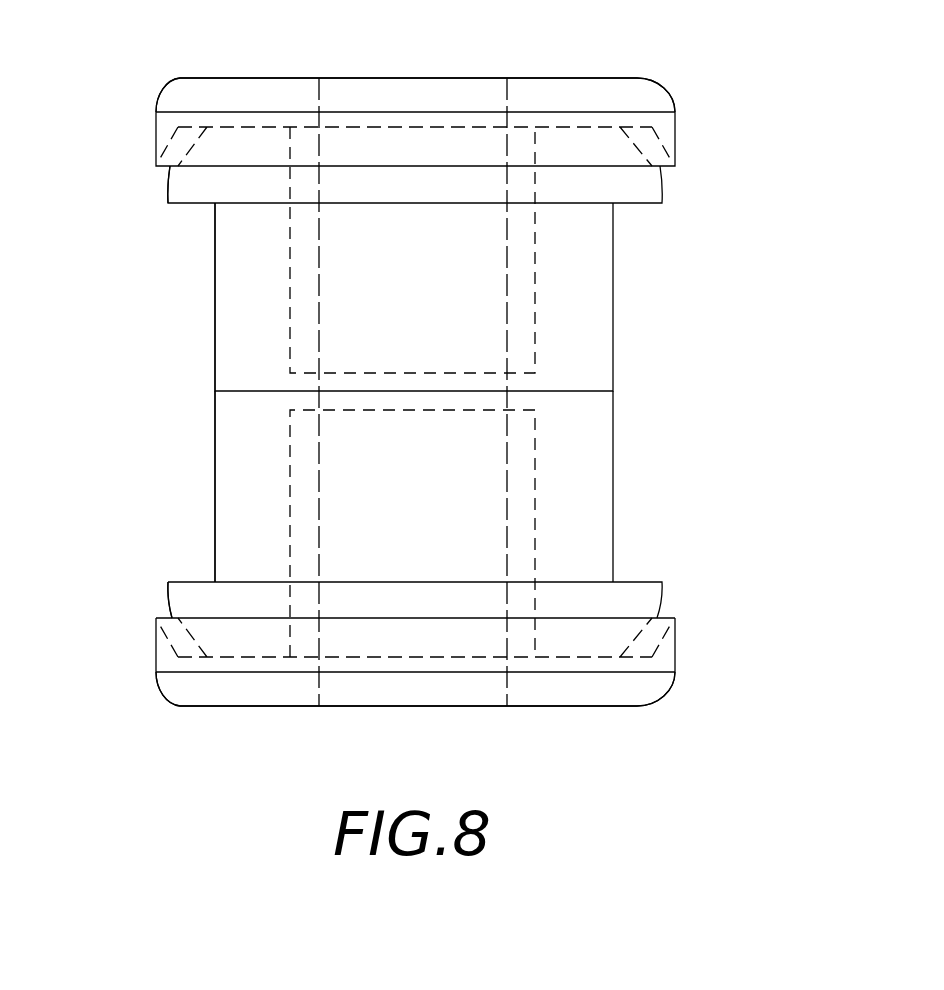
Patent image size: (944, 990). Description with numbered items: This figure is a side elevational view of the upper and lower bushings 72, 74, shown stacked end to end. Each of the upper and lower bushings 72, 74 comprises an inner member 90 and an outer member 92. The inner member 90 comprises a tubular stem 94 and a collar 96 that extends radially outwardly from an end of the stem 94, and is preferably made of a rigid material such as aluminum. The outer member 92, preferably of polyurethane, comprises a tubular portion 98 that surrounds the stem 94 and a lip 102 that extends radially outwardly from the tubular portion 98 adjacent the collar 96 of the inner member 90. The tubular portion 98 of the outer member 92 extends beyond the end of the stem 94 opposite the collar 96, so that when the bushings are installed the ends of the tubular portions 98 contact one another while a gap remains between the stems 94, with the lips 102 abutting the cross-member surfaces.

The upper bushing 72 is at (705, 252).
The lower bushing 74 is at (690, 492).
The inner member 90 is at (675, 84).
The outer member 92 is at (677, 186).
The tubular stem 94 is at (527, 318).
The collar 96 is at (178, 93).
The tubular portion 98 is at (235, 297).
The lip 102 is at (172, 183).